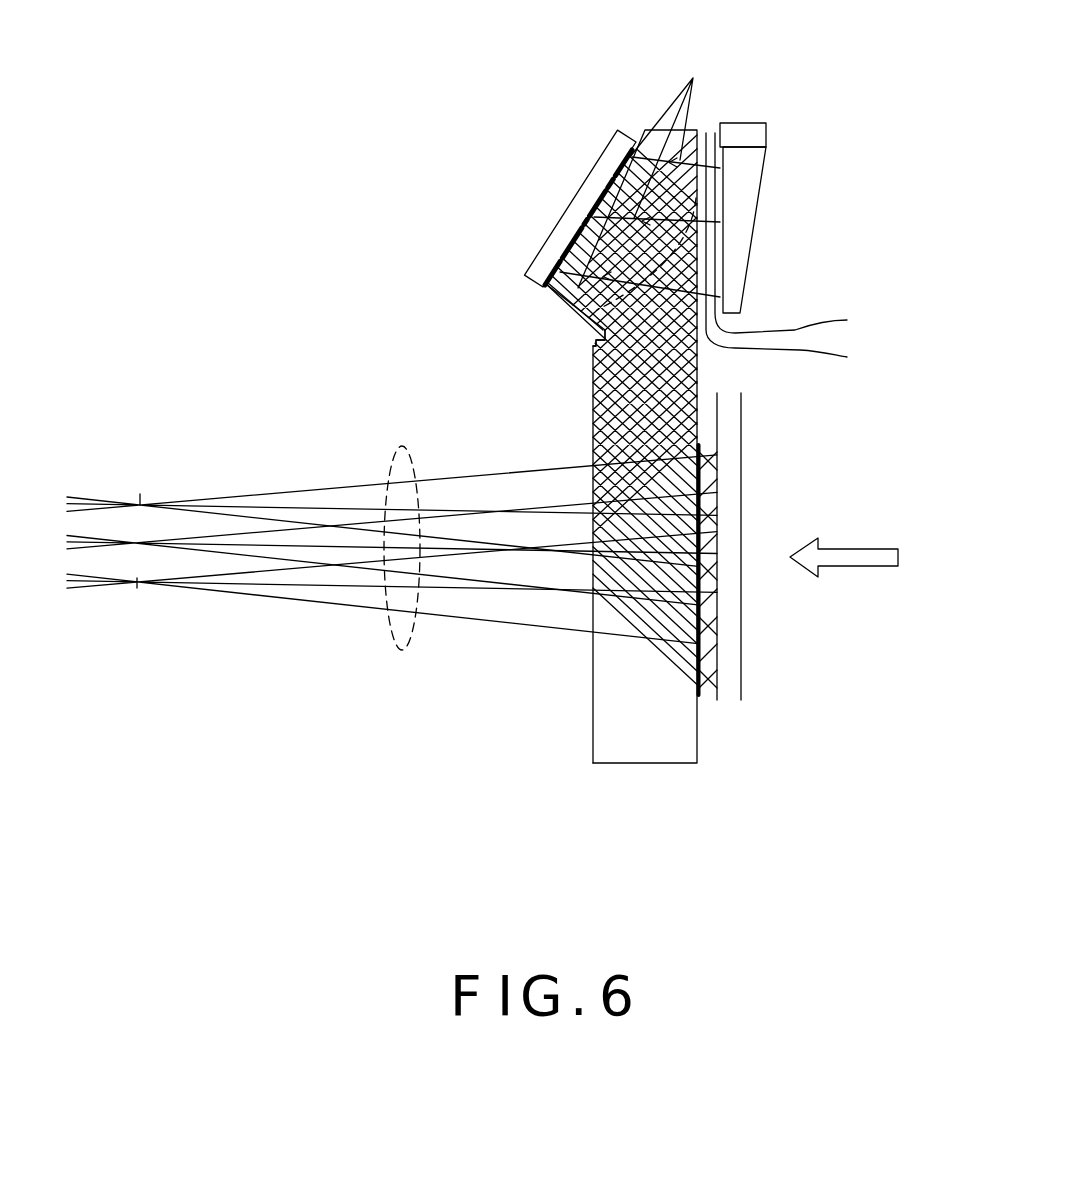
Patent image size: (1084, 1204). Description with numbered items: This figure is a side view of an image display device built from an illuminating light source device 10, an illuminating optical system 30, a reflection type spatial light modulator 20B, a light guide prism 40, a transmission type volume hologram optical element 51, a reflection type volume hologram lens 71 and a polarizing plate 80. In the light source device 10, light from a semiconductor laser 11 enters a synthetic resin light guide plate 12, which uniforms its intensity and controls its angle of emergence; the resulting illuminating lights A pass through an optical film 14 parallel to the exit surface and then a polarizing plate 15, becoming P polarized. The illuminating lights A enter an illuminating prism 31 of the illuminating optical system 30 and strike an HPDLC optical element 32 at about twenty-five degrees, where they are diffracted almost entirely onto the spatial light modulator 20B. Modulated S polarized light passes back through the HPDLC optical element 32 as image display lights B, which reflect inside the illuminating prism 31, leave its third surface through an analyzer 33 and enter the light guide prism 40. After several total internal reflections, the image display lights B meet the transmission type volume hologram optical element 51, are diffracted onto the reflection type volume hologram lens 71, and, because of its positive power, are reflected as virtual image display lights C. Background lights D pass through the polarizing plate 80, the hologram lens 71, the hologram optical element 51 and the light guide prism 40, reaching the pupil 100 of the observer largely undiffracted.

The illuminating light source device 10 is at (833, 255).
The semiconductor laser 11 is at (750, 140).
The light guide plate 12 is at (747, 210).
The optical film 14 is at (796, 237).
The polarizing plate 15 is at (893, 187).
The reflection type spatial light modulator 20B is at (577, 210).
The illuminating optical system 30 is at (486, 255).
The illuminating prism 31 is at (557, 300).
The HPDLC optical element 32 is at (547, 285).
The analyzer 33 is at (590, 343).
The light guide prism 40 is at (613, 768).
The transmission type volume hologram optical element 51 is at (698, 698).
The reflection type volume hologram lens 71 is at (718, 697).
The polarizing plate 80 is at (742, 633).
The pupil 100 is at (135, 588).
The illuminating lights A is at (640, 175).
The image display lights B is at (587, 356).
The virtual image display lights C is at (397, 645).
The background lights D is at (844, 543).